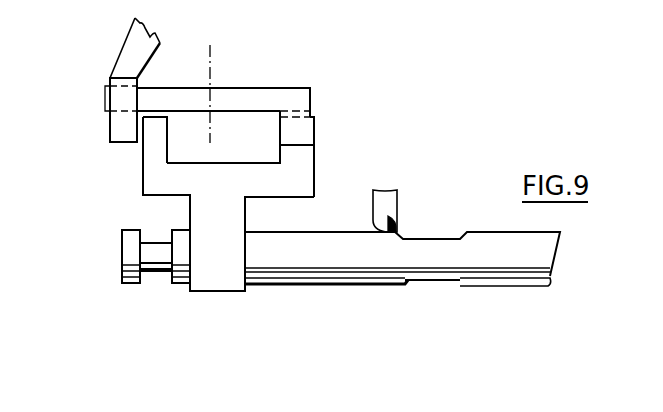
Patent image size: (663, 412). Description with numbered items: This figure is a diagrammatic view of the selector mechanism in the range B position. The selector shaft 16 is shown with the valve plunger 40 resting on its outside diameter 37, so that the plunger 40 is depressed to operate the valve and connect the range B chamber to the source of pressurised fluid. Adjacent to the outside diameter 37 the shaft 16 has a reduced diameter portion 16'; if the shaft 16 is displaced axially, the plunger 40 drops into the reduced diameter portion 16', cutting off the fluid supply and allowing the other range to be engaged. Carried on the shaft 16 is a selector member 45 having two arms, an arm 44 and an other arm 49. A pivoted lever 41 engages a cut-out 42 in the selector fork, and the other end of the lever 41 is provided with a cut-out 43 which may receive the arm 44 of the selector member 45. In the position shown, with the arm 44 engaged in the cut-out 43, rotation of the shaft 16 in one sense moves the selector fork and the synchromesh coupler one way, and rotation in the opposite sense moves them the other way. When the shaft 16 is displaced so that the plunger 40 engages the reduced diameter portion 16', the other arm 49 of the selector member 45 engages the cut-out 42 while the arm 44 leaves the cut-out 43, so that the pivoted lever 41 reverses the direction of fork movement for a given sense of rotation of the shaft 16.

The cut-out 42 is at (110, 79).
The lever 41 is at (250, 97).
The cut-out 43 is at (310, 117).
The arm 44 is at (307, 153).
The other arm 49 is at (158, 130).
The selector member 45 is at (185, 185).
The plunger 40 is at (383, 208).
The selector shaft 16 is at (402, 286).
The reduced diameter portion 16' is at (432, 310).
The outside diameter 37 is at (320, 287).